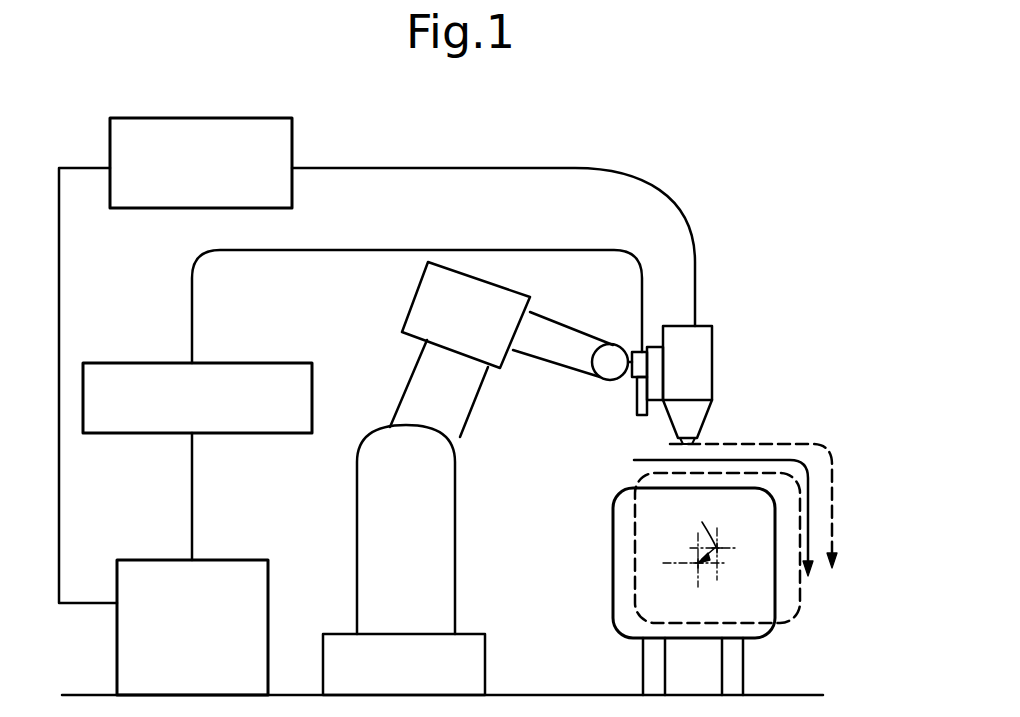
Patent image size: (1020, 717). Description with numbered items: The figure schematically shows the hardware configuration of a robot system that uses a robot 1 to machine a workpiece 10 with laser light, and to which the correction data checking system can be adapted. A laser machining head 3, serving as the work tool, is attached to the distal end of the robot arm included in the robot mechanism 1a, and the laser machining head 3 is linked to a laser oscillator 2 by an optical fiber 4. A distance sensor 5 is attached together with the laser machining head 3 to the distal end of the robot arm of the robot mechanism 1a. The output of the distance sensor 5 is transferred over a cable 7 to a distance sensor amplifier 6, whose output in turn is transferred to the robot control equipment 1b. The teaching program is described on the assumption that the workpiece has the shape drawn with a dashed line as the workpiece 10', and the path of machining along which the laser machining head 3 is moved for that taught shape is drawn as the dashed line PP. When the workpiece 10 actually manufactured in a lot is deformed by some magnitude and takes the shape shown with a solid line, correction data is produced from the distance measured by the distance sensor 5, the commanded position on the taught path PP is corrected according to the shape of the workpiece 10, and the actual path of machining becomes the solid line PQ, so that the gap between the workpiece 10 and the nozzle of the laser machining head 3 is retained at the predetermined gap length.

The robot 1 is at (462, 478).
The robot mechanism 1a is at (415, 398).
The robot control equipment 1b is at (230, 560).
The laser oscillator 2 is at (295, 143).
The laser machining head 3 is at (703, 355).
The optical fiber 4 is at (685, 228).
The distance sensor 5 is at (638, 402).
The distance sensor amplifier 6 is at (155, 363).
The cable 7 is at (377, 250).
The workpiece 10 is at (715, 591).
The workpiece (taught shape) 10' is at (757, 558).
The taught path of machining PP is at (832, 473).
The corrected path of machining PQ is at (808, 558).